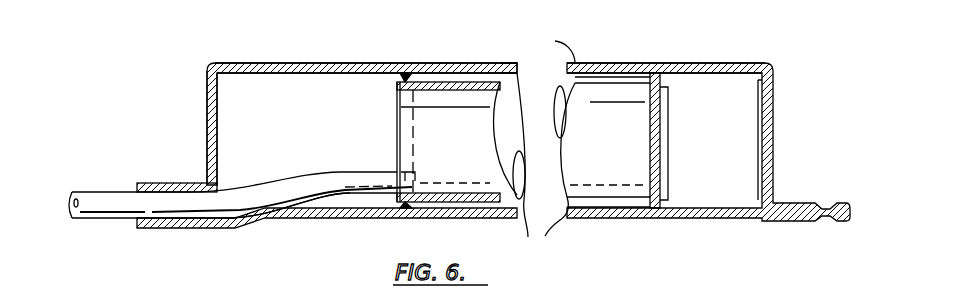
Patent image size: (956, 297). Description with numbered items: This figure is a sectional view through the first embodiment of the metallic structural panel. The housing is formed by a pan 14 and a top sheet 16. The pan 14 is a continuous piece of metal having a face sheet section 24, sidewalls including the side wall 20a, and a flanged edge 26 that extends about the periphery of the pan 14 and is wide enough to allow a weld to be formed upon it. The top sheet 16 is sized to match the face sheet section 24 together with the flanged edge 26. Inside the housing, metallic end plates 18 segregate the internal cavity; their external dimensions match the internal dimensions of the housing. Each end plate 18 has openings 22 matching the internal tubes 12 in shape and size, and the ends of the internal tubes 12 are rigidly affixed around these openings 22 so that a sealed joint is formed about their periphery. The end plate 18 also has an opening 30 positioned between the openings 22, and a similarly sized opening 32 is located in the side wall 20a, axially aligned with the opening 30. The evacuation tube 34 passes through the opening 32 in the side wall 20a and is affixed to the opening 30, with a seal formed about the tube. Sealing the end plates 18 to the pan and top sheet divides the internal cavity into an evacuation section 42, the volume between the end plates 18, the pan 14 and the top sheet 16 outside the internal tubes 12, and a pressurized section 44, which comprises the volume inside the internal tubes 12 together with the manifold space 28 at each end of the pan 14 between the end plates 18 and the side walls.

The pan 14 is at (249, 62).
The manifold space 28 is at (318, 92).
The side wall 20a is at (207, 112).
The face sheet section 24 is at (513, 64).
The opening 32 is at (167, 198).
The top sheet 16 is at (346, 219).
The evacuation tube 34 is at (92, 213).
The pressurized section 44 is at (297, 162).
The openings 22 is at (444, 115).
The opening 30 is at (412, 167).
The evacuation section 42 is at (453, 204).
The flanged edge 26 is at (793, 200).
The internal tubes 12 is at (567, 182).
The end plates 18 is at (667, 64).